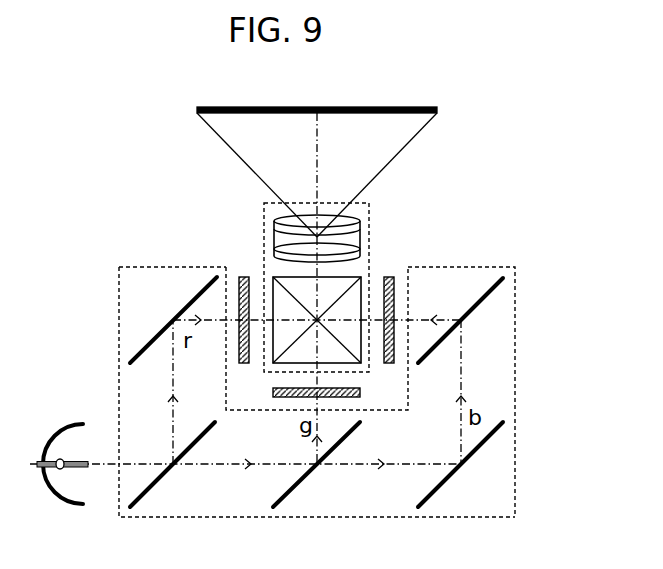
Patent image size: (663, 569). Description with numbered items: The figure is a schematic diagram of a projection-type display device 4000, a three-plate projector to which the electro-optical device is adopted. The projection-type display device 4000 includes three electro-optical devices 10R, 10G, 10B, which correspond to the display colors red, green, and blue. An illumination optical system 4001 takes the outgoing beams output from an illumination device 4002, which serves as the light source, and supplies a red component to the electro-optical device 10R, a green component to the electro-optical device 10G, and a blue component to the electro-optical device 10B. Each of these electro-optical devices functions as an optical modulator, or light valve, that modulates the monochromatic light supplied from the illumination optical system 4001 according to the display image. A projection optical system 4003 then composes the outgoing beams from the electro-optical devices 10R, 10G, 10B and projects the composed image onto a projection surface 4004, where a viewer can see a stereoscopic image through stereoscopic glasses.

The projection-type display device 4000 is at (152, 226).
The illumination optical system 4001 is at (492, 267).
The illumination device 4002 is at (70, 425).
The projection optical system 4003 is at (370, 232).
The projection surface 4004 is at (350, 114).
The electro-optical device 10R is at (239, 353).
The electro-optical device 10G is at (277, 398).
The electro-optical device 10B is at (395, 304).